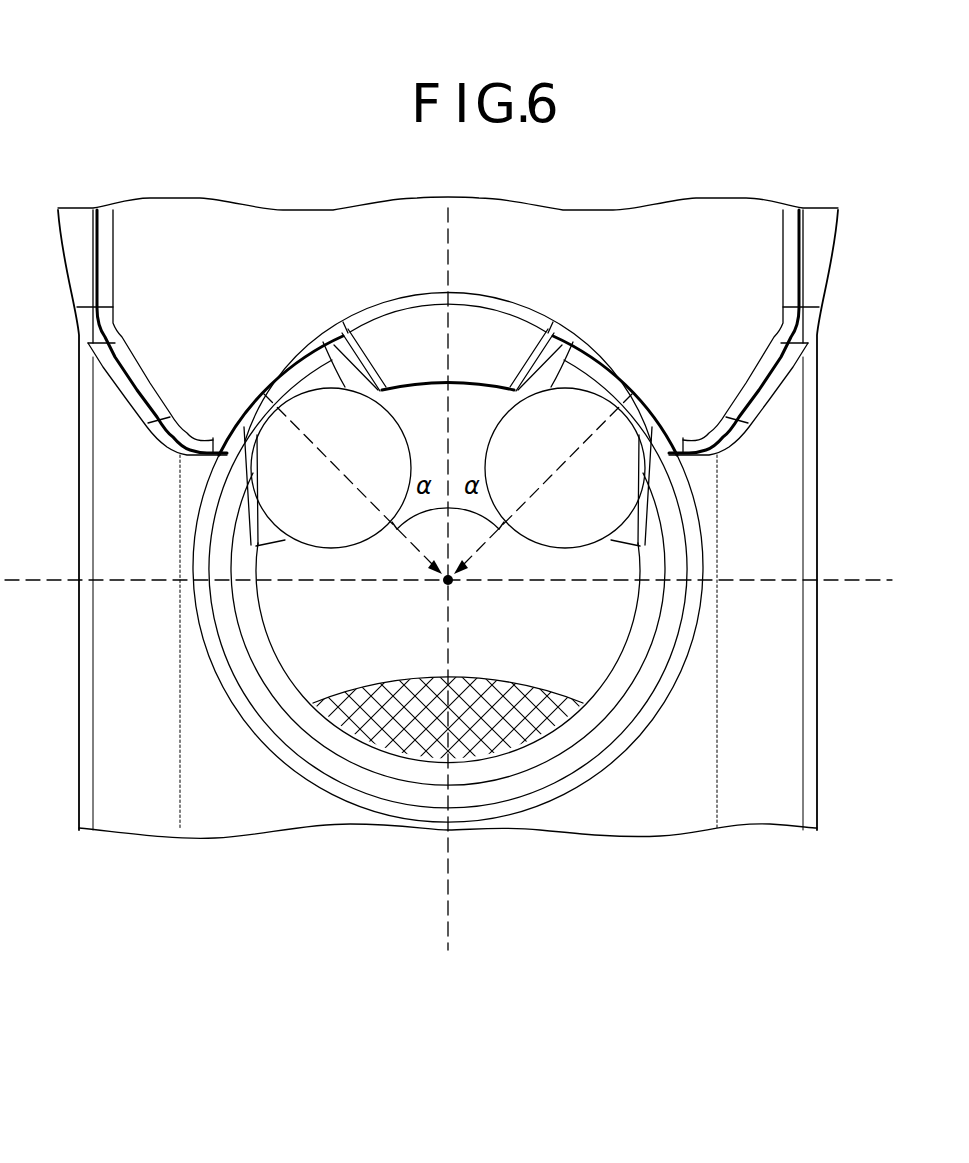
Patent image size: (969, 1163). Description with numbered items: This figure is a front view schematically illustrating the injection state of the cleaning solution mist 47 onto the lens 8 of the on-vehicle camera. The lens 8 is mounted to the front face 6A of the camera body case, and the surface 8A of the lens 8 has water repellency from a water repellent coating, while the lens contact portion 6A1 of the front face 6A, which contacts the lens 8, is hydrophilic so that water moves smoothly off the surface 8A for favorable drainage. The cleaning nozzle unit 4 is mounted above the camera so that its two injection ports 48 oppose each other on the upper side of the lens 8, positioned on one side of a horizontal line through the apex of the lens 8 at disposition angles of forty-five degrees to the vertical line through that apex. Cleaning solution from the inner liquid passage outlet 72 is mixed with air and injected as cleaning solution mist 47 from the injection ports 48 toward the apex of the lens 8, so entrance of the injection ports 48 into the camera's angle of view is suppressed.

The cleaning nozzle unit 4 is at (786, 386).
The front face 6A is at (687, 740).
The lens contact portion 6A1 is at (598, 714).
The lens 8 is at (630, 652).
The surface 8A is at (615, 626).
The cleaning solution mist 47 is at (250, 505).
The injection ports 48 is at (278, 376).
The inner liquid passage outlet 72 is at (752, 295).